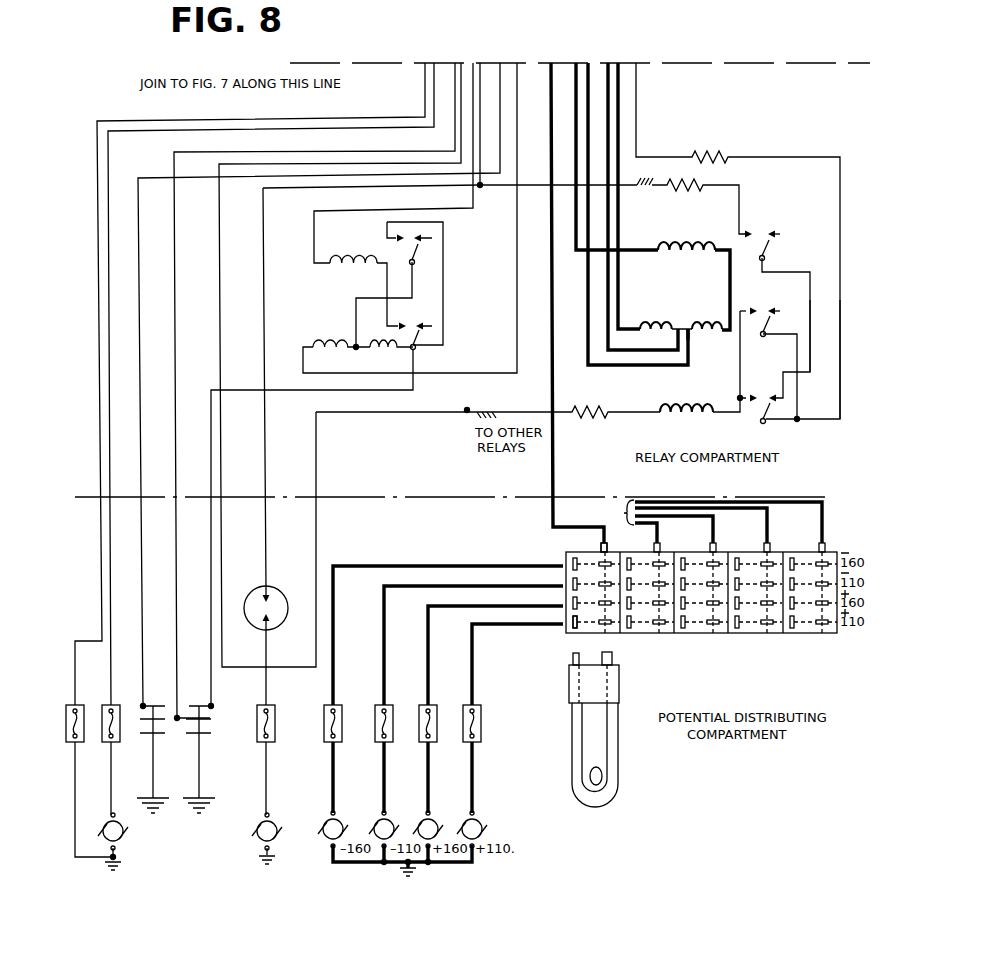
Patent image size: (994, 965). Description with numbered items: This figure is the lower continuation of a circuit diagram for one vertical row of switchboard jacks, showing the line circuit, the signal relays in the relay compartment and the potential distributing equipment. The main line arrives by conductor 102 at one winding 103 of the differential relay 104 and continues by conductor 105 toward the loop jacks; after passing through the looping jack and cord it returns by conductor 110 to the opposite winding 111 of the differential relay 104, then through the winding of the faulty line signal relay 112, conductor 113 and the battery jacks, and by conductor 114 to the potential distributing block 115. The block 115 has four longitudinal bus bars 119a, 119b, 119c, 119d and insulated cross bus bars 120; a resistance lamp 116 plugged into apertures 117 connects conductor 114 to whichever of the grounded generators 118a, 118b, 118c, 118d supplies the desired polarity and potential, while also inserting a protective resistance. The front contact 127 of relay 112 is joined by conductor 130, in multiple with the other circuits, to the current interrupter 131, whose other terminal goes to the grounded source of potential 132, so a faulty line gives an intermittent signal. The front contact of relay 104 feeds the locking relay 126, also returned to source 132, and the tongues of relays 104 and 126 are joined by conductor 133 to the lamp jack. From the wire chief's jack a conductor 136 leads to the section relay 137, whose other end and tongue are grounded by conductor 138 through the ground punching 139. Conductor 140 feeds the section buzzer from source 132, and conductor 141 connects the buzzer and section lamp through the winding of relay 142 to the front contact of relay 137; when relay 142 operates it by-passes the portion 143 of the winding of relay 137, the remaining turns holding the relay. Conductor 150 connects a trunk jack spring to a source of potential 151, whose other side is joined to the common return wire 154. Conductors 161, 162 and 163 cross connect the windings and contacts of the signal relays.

The conductor 102 is at (619, 101).
The winding of differential relay 103 is at (653, 320).
The differential relay 104 is at (691, 338).
The conductor 105 is at (608, 276).
The conductor 110 is at (576, 114).
The winding of differential relay 111 is at (707, 320).
The faulty line signal relay 112 is at (686, 246).
The conductor 113 is at (577, 206).
The conductor 114 is at (551, 83).
The potential distributing block 115 is at (694, 636).
The resistance lamp 116 is at (607, 753).
The apertures 117 is at (578, 625).
The grounded generator 118a is at (336, 820).
The grounded generator 118b is at (386, 820).
The grounded generator 118c is at (430, 820).
The grounded generator 118d is at (473, 820).
The longitudinally extending bus bar 119a is at (563, 565).
The longitudinally extending bus bar 119b is at (563, 585).
The longitudinally extending bus bar 119c is at (563, 605).
The longitudinally extending bus bar 119d is at (563, 623).
The cross bus bars 120 is at (606, 546).
The locking relay 126 is at (692, 404).
The front contact of faulty line relay 127 is at (752, 235).
The conductor 130 is at (350, 188).
The current interrupter 131 is at (274, 594).
The grounded source of potential 132 is at (272, 823).
The conductor 133 is at (636, 88).
The conductor 136 is at (517, 106).
The section relay 137 is at (324, 342).
The conductor 138 is at (343, 392).
The ground punching 139 is at (208, 718).
The conductor 140 is at (458, 135).
The conductor 141 is at (473, 135).
The relay 142 is at (480, 106).
The portion of windings 143 is at (368, 352).
The conductor 150 is at (434, 103).
The source of potential 151 is at (122, 822).
The common return wire 154 is at (424, 80).
The conductor 161 is at (810, 310).
The conductor 162 is at (731, 285).
The conductor 163 is at (840, 279).